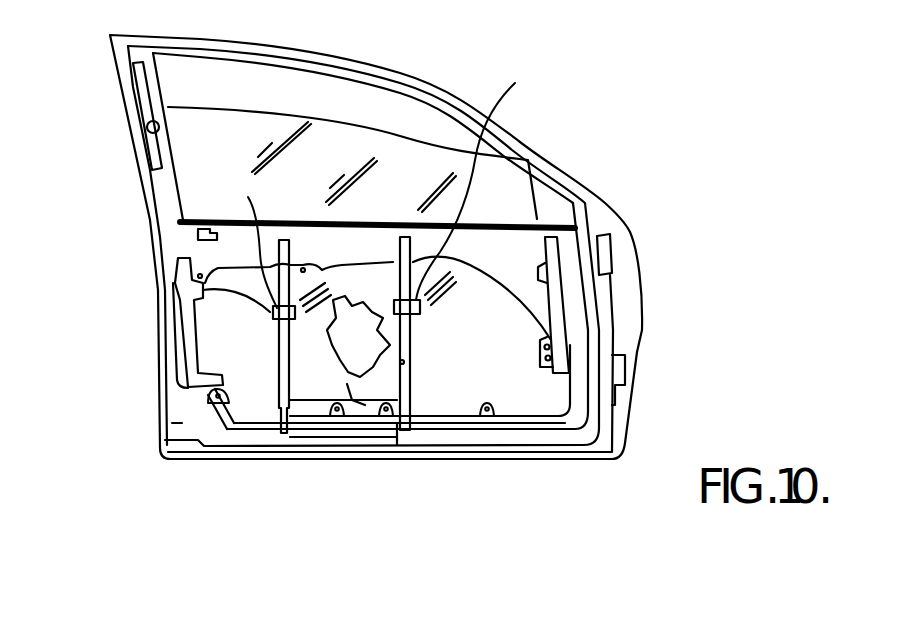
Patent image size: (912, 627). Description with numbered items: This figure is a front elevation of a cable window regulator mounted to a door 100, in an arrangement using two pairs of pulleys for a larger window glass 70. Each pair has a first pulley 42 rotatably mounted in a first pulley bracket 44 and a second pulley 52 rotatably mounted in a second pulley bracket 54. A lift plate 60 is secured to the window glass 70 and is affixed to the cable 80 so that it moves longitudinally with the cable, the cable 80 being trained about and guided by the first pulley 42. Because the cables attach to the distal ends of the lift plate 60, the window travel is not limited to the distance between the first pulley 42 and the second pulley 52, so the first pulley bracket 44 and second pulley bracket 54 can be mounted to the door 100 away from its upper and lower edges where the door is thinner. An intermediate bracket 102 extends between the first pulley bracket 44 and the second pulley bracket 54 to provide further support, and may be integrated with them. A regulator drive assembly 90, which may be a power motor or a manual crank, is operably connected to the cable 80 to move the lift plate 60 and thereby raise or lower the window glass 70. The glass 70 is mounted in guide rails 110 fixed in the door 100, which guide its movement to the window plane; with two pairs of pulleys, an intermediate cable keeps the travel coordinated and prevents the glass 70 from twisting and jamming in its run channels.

The door 100 is at (613, 317).
The guide rails 110 is at (567, 309).
The window glass 70 is at (275, 107).
The intermediate bracket 102 is at (407, 380).
The first pulley 42 is at (284, 240).
The first pulley bracket 44 is at (380, 177).
The lift plate 60 is at (274, 314).
The regulator drive assembly 90 is at (338, 305).
The cable 80 is at (347, 384).
The second pulley 52 is at (283, 435).
The second pulley bracket 54 is at (278, 400).